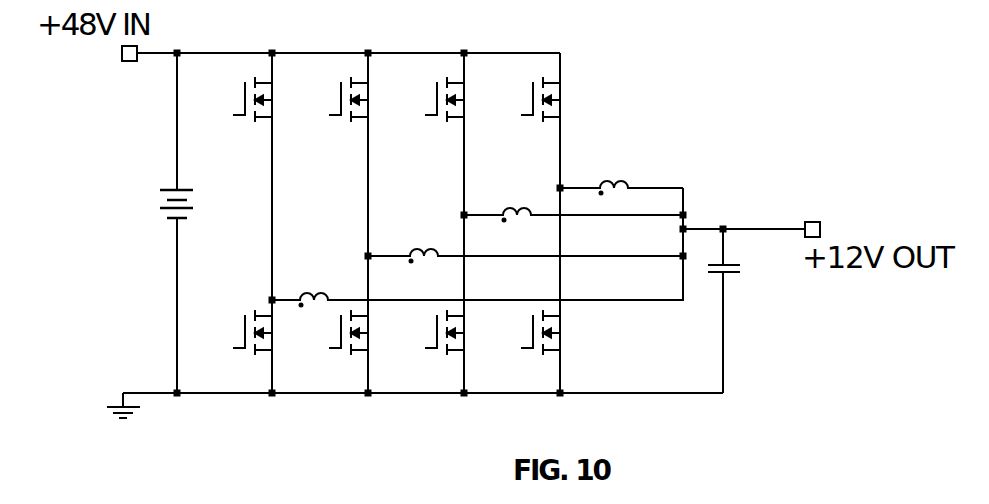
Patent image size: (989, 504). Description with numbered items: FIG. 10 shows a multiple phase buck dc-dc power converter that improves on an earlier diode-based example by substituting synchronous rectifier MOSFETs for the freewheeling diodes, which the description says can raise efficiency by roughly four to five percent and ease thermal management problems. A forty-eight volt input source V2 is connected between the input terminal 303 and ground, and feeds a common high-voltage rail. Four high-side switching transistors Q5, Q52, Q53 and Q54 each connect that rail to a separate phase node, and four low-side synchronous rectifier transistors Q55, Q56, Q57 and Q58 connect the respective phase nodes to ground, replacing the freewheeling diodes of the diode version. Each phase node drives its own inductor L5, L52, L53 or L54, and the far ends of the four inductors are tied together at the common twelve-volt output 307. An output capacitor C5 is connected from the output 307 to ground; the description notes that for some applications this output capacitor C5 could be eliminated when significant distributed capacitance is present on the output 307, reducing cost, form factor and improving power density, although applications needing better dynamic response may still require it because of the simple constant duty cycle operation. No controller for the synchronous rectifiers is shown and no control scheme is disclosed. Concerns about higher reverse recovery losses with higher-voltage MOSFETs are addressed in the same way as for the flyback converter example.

The input terminal (+48V IN) 303 is at (128, 63).
The output 307 is at (812, 221).
The 48 V input voltage source V2 is at (155, 205).
The high-side switching transistor Q5 is at (246, 120).
The high-side switching transistor Q52 is at (335, 120).
The high-side switching transistor Q53 is at (428, 120).
The high-side switching transistor Q54 is at (525, 120).
The low-side switching transistor Q55 is at (240, 351).
The low-side switching transistor Q56 is at (335, 351).
The low-side switching transistor Q57 is at (428, 351).
The low-side switching transistor Q58 is at (524, 351).
The inductor L5 is at (476, 248).
The inductor L52 is at (524, 236).
The inductor L53 is at (572, 195).
The inductor L54 is at (620, 165).
The output capacitor C5 is at (746, 311).